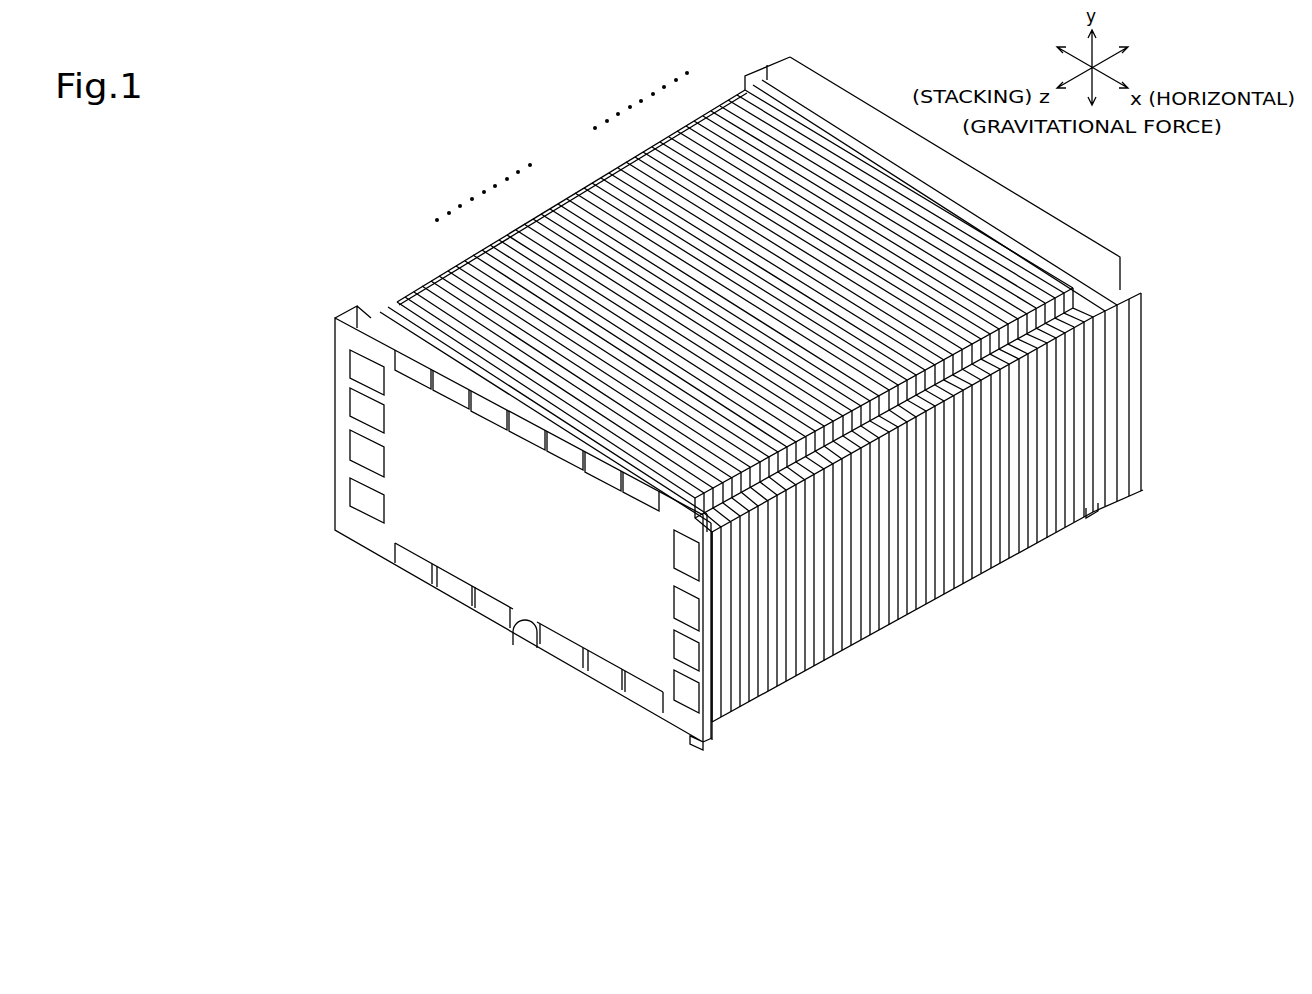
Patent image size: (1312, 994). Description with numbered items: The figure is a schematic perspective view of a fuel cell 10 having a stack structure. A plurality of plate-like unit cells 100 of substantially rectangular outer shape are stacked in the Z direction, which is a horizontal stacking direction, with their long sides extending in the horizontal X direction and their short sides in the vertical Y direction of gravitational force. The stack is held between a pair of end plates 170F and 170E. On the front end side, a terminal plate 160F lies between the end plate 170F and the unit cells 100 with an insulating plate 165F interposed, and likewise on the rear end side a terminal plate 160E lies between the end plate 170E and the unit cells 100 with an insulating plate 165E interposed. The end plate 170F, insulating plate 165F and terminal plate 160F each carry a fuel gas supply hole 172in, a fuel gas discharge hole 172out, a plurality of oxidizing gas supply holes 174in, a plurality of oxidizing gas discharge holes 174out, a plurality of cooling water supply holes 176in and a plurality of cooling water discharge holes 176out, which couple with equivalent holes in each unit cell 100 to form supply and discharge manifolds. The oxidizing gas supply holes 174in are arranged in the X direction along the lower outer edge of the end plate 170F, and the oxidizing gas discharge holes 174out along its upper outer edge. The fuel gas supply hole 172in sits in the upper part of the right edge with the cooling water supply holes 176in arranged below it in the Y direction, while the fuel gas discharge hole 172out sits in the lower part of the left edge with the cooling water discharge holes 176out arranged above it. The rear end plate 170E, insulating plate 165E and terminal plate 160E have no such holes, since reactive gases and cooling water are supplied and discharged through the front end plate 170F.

The fuel cell 10 is at (330, 68).
The unit cells 100 is at (582, 218).
The terminal plate on the front end side 160F is at (390, 300).
The insulating plate on the front end side 165F is at (370, 315).
The end plate on the front end side 170F is at (337, 316).
The terminal plate on the rear end side 160E is at (750, 83).
The insulating plate on the rear end side 165E is at (760, 76).
The end plate on the rear end side 170E is at (795, 58).
The cooling water discharge holes 176out is at (360, 450).
The fuel gas discharge hole 172out is at (362, 497).
The oxidizing gas discharge holes 174out is at (417, 374).
The oxidizing gas supply holes 174in is at (420, 565).
The fuel gas supply hole 172in is at (685, 556).
The cooling water supply holes 176in is at (685, 610).